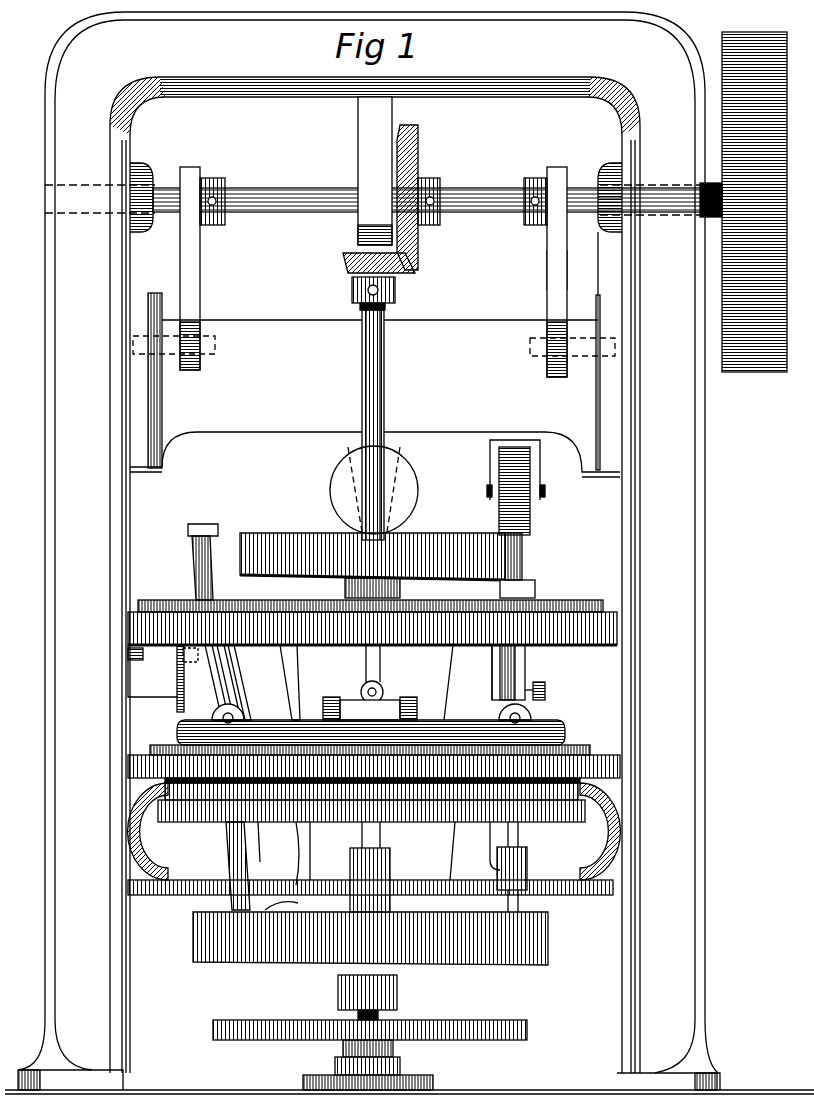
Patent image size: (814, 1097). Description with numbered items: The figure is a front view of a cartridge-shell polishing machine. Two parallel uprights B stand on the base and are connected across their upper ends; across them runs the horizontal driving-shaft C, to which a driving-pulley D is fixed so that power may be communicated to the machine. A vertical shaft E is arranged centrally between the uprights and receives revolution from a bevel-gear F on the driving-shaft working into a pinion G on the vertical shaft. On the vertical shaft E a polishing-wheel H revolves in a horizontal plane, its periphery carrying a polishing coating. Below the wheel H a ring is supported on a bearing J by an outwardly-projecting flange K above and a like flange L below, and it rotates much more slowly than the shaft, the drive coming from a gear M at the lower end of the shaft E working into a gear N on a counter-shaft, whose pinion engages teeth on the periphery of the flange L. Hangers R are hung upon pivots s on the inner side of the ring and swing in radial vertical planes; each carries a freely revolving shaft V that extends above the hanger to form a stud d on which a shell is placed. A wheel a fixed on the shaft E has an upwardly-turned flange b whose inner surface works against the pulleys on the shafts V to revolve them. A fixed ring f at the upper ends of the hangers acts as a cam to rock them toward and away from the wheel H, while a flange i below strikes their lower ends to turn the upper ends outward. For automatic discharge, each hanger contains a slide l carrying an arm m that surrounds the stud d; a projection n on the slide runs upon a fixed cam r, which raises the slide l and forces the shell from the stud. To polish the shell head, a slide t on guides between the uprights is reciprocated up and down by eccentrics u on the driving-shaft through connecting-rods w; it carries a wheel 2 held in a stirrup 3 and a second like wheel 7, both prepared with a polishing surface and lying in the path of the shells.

The uprights B is at (409, 553).
The driving-shaft C is at (383, 189).
The driving-pulley D is at (743, 202).
The eccentrics u is at (180, 178).
The connecting-rods w is at (557, 270).
The bevel-gear F is at (399, 183).
The pinion G is at (369, 279).
The vertical shaft E is at (395, 380).
The slide t is at (375, 385).
The stirrup 3 is at (521, 470).
The wheel 2 is at (514, 491).
The second wheel 7 is at (374, 490).
The polishing-wheel H is at (372, 546).
The arm m is at (366, 554).
The slide l is at (360, 618).
The studs d is at (378, 556).
The ring f is at (372, 616).
The fixed cam r is at (156, 678).
The projection n is at (390, 684).
The hangers R is at (348, 682).
The shaft V is at (240, 700).
The pivot s is at (240, 718).
The flange K is at (371, 732).
The bearing J is at (374, 812).
The flange L is at (371, 812).
The flange i is at (370, 867).
The flange b is at (370, 931).
The wheel a is at (317, 992).
The gear M is at (370, 1019).
The gear N is at (404, 1044).